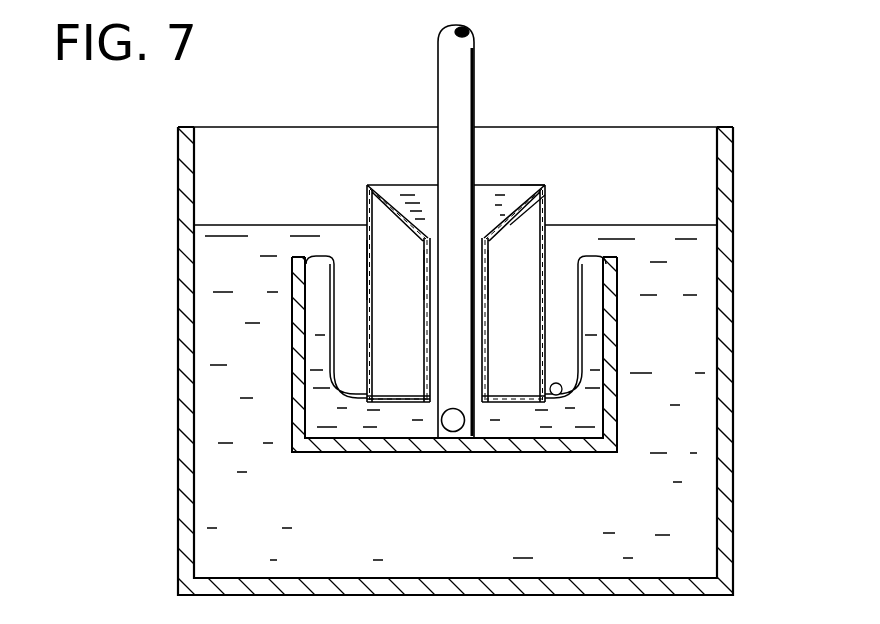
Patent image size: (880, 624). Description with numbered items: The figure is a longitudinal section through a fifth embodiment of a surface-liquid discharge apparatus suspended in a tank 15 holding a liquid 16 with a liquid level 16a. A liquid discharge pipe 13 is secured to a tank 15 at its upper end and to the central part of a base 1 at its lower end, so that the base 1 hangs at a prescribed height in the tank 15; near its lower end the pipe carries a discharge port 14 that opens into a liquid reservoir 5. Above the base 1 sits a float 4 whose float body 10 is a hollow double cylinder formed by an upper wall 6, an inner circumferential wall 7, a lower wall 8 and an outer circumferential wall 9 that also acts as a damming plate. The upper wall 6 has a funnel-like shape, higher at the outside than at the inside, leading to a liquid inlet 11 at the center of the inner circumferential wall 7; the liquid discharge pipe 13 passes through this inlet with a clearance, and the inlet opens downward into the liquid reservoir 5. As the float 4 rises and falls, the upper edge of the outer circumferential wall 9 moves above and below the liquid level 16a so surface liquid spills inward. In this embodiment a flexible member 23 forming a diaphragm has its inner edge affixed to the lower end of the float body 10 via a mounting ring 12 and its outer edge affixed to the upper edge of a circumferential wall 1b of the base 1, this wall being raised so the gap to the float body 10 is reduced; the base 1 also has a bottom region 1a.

The base 1 is at (300, 452).
The bottom wall of sample vessel 1a is at (422, 455).
The circumferential wall 1b is at (293, 417).
The float 4 is at (550, 215).
The liquid reservoir 5 is at (352, 422).
The upper wall 6 is at (490, 183).
The inner circumferential wall 7 is at (418, 270).
The lower wall 8 is at (402, 402).
The outer circumferential wall 9 is at (363, 262).
The float body 10 is at (550, 195).
The liquid inlet 11 is at (493, 270).
The mounting ring 12 is at (556, 395).
The liquid discharge pipe 13 is at (477, 52).
The discharge port 14 is at (453, 422).
The tank 15 is at (733, 350).
The liquid 16 is at (693, 280).
The liquid level 16a is at (688, 227).
The flexible member 23 is at (337, 358).